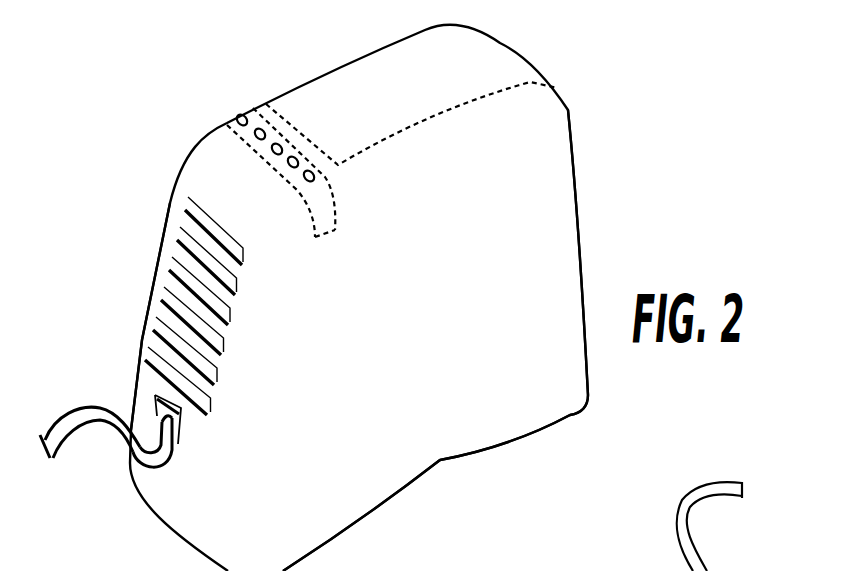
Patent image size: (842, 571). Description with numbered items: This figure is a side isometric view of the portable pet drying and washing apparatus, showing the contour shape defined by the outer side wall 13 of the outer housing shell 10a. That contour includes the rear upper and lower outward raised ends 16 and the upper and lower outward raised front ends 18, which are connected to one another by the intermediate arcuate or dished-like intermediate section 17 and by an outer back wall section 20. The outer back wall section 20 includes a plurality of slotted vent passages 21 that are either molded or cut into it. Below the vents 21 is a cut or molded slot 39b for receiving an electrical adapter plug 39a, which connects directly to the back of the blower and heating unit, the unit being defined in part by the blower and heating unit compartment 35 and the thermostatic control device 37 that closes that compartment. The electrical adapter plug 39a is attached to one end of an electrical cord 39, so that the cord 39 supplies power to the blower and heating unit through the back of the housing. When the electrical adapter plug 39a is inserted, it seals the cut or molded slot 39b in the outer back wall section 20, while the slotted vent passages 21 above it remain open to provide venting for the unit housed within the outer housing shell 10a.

The outer housing shell 10a is at (580, 108).
The outer side wall 13 is at (443, 293).
The rear upper and lower outward raised ends 16 is at (300, 317).
The intermediate arcuate or dished-like intermediate section 17 is at (422, 427).
The upper and lower outward raised front ends 18 is at (538, 172).
The outer back wall section 20 is at (203, 442).
The slotted vent passages 21 is at (243, 263).
The blower and heating unit compartment 35 is at (336, 231).
The thermostatic control device 37 is at (277, 162).
The electrical cord 39 is at (62, 408).
The electrical adapter plug 39a is at (152, 466).
The cut or molded slot 39b is at (132, 402).